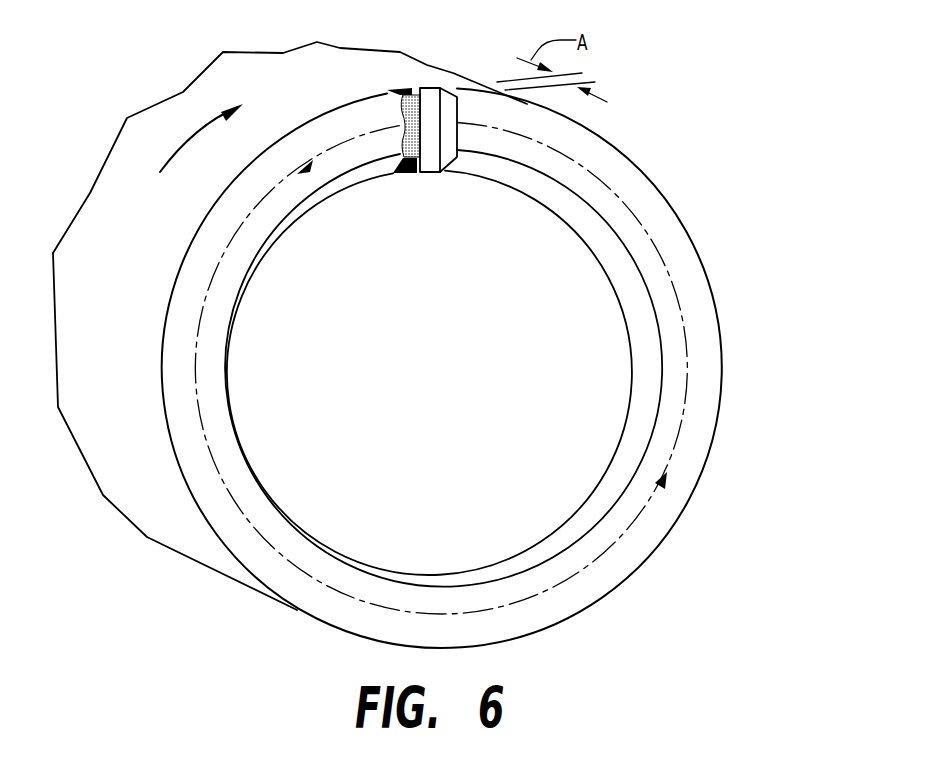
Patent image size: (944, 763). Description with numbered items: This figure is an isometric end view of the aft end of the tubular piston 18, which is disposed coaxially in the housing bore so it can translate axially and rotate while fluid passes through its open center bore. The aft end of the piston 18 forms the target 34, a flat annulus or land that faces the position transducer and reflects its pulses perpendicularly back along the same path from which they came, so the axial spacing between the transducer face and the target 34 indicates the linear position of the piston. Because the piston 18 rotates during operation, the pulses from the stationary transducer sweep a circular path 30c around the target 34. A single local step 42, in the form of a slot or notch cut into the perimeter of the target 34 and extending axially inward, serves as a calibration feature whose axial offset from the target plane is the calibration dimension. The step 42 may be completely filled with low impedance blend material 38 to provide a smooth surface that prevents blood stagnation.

The piston 18 is at (464, 75).
The target 34 is at (683, 272).
The circular path 30c is at (685, 410).
The low impedance blend material 38 is at (403, 117).
The step 42 is at (423, 152).